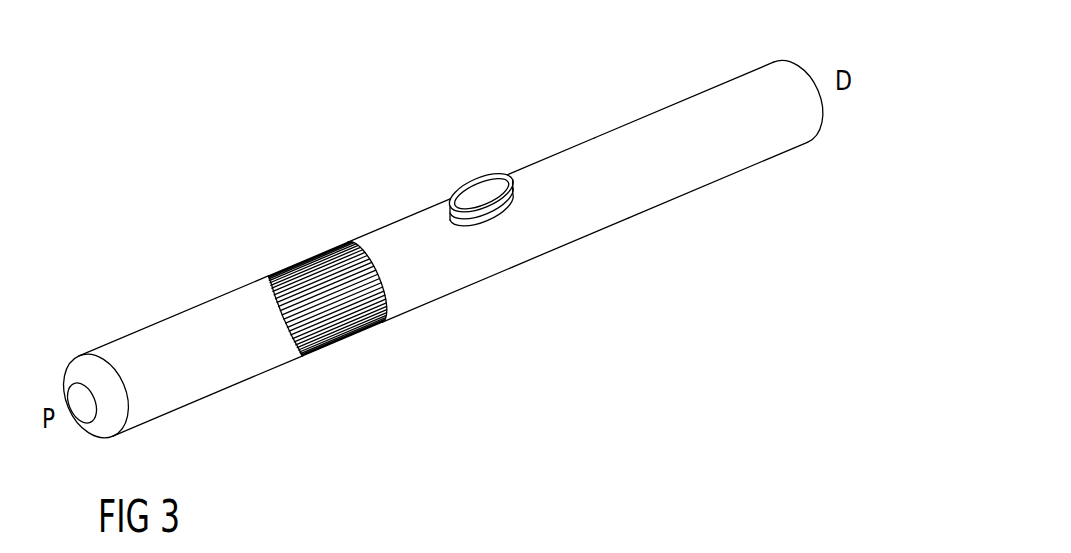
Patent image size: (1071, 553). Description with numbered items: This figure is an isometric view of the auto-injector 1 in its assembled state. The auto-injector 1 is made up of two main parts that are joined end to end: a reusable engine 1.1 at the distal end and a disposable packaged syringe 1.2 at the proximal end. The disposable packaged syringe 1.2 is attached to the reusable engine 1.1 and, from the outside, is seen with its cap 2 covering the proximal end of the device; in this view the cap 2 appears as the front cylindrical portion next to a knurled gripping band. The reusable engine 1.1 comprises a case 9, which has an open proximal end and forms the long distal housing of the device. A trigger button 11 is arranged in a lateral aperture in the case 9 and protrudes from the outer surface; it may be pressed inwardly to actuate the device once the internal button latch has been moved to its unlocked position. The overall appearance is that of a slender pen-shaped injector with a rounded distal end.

The auto-injector 1 is at (322, 63).
The reusable engine 1.1 is at (612, 108).
The disposable packaged syringe 1.2 is at (147, 312).
The cap 2 is at (222, 315).
The case 9 is at (686, 116).
The trigger button 11 is at (478, 195).